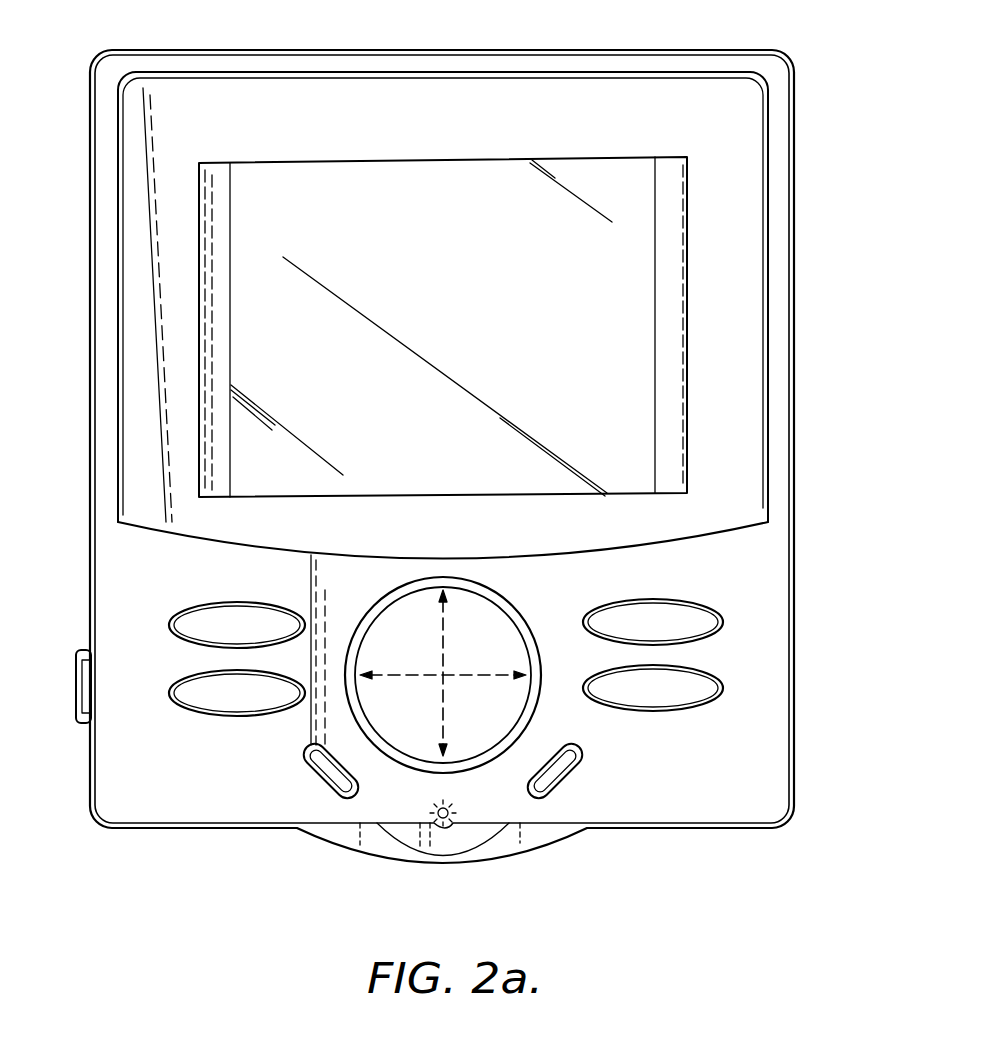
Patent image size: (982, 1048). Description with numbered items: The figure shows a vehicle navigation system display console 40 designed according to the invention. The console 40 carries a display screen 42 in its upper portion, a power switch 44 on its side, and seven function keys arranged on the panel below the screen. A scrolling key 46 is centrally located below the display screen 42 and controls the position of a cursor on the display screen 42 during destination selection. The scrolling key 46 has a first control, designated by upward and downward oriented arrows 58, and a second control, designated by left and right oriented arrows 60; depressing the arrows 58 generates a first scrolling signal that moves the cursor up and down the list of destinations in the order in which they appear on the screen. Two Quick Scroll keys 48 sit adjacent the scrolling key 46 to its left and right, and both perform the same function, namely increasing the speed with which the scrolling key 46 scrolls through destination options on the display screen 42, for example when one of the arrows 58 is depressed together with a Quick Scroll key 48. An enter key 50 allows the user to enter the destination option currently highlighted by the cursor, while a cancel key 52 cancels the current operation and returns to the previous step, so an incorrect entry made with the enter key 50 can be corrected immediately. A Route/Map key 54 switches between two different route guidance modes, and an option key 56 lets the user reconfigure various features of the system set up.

The vehicle navigation system display console 40 is at (738, 49).
The display screen 42 is at (521, 236).
The power switch 44 is at (76, 694).
The scrolling key 46 is at (519, 612).
The Quick Scroll keys 48 is at (322, 787).
The enter key 50 is at (698, 692).
The cancel key 52 is at (685, 625).
The Route/Map key 54 is at (200, 623).
The option key 56 is at (190, 692).
The upward and downward oriented arrows 58 is at (448, 606).
The left and right oriented arrows 60 is at (372, 671).